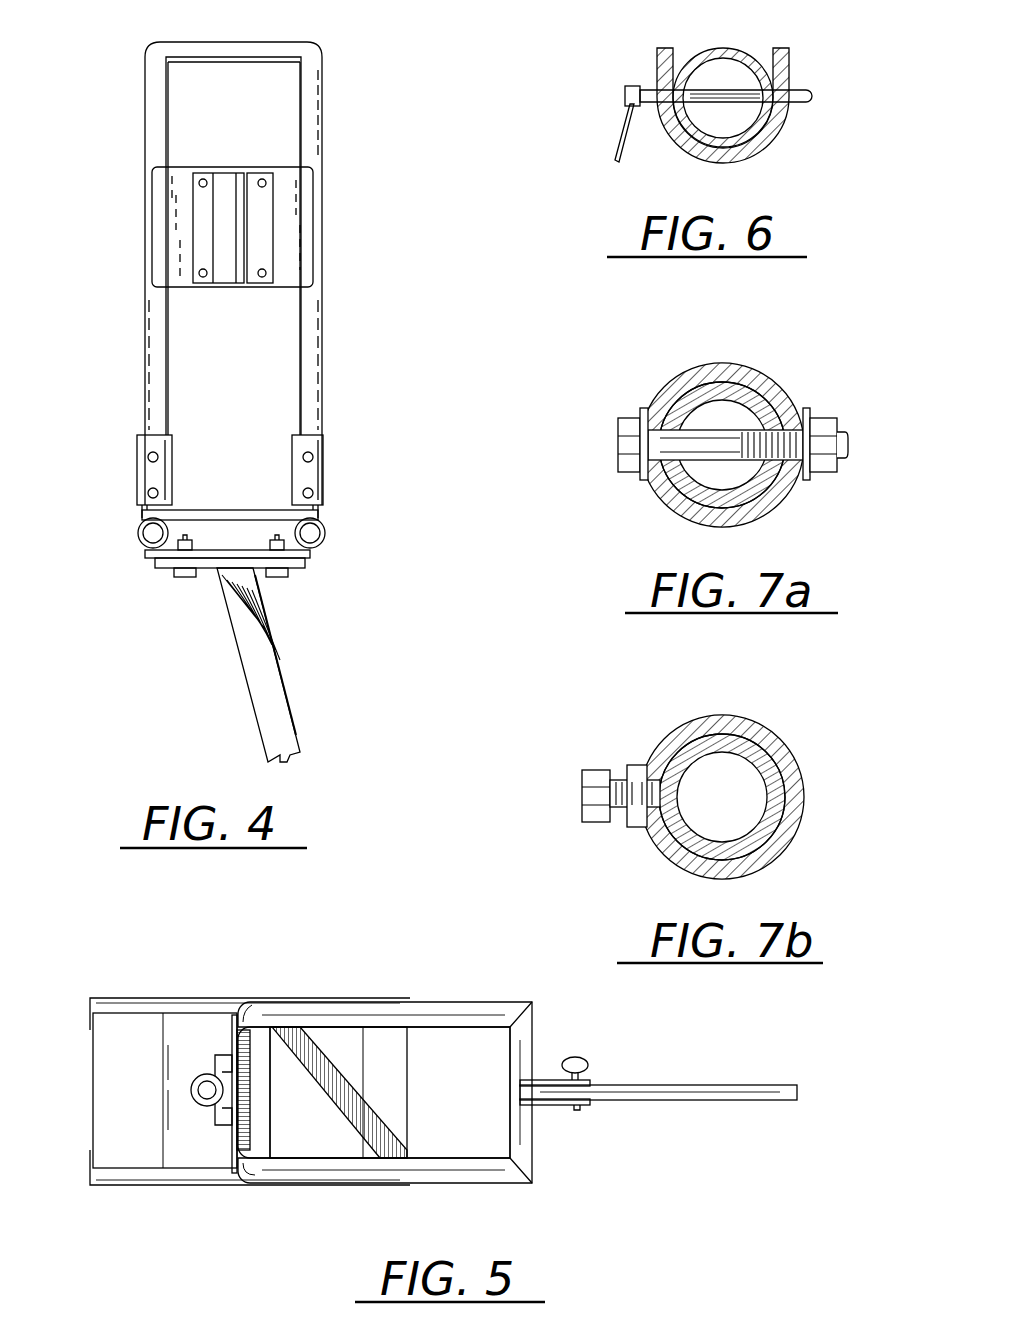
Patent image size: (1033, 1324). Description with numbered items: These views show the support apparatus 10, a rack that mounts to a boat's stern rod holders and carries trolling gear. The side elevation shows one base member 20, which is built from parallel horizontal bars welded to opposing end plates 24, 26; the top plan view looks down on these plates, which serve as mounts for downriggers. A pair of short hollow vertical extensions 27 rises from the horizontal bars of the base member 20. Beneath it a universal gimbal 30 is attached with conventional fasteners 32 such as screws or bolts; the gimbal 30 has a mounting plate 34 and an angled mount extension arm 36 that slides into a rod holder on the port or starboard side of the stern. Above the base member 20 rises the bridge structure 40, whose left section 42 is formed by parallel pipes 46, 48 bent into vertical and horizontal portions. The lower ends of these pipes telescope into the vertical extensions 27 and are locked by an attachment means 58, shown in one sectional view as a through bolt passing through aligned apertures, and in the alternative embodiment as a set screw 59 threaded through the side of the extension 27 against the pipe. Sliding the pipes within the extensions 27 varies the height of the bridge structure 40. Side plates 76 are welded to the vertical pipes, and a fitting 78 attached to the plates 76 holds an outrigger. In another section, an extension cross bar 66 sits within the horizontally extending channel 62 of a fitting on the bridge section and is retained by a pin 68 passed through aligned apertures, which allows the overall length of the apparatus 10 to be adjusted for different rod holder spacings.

In FIG. 4, the support apparatus 10 is at (340, 78).
In FIG. 5, the support apparatus 10 is at (378, 970).
In FIG. 4, the base member 20 is at (330, 522).
In FIG. 5, the base member 20 is at (168, 998).
In FIG. 4, the end plate 24 is at (255, 510).
In FIG. 5, the end plate 24 is at (105, 1055).
In FIG. 5, the end plate 26 is at (405, 1110).
In FIG. 4, the hollow vertical extension 27 is at (137, 463).
In FIG. 4, the universal gimbal 30 is at (243, 660).
In FIG. 4, the fasteners 32 is at (175, 575).
In FIG. 4, the mounting plate 34 is at (300, 570).
In FIG. 4, the angled mount extension arm 36 is at (275, 690).
In FIG. 4, the bridge structure 40 is at (143, 112).
In FIG. 5, the bridge structure 40 is at (463, 998).
In FIG. 4, the left section 42 is at (322, 133).
In FIG. 4, the parallel pipe 46 is at (145, 340).
In FIG. 4, the parallel pipe 48 is at (318, 350).
In FIG. 7A, the attachment means 58 is at (735, 420).
In FIG. 7B, the attachment means 58 is at (637, 770).
In FIG. 7B, the set screw 59 is at (585, 805).
In FIG. 6, the channel 62 is at (790, 62).
In FIG. 6, the extension cross bar 66 is at (748, 48).
In FIG. 6, the pin 68 is at (640, 90).
In FIG. 4, the side plate 76 is at (313, 215).
In FIG. 5, the side plate 76 is at (230, 1025).
In FIG. 4, the fitting 78 is at (230, 182).
In FIG. 5, the fitting 78 is at (190, 1100).